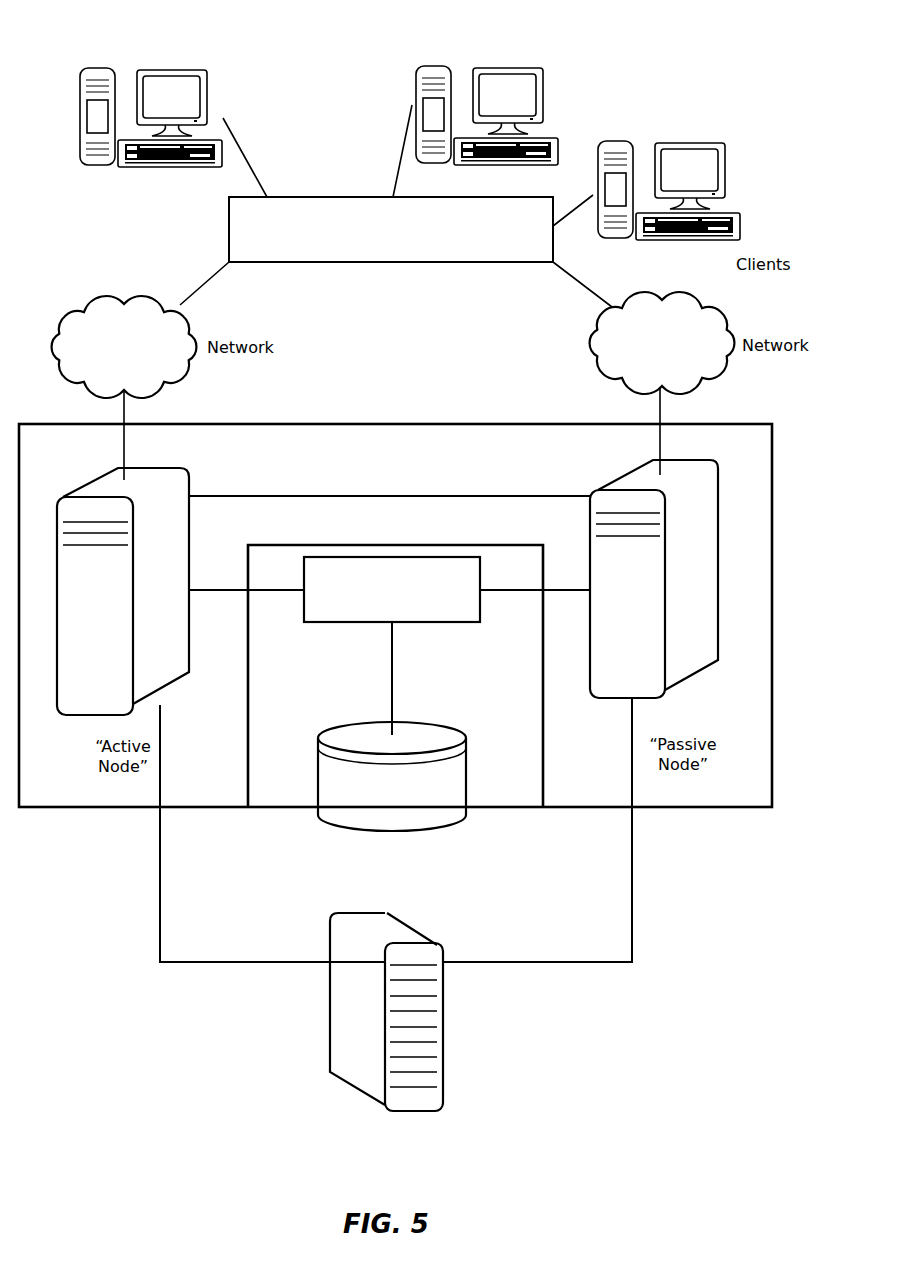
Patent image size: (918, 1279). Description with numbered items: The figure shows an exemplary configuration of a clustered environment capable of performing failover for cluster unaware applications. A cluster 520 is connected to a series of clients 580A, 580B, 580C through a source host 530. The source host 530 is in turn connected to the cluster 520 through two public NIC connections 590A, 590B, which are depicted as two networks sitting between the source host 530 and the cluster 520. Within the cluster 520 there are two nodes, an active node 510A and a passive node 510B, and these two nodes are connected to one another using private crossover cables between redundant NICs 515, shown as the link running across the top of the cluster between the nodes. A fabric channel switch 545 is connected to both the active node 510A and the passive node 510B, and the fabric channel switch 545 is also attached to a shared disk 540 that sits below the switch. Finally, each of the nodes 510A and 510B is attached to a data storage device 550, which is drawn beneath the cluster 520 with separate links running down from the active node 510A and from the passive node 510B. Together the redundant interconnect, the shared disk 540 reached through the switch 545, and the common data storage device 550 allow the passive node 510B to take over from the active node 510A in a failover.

The client 580A is at (690, 143).
The client 580B is at (509, 68).
The client 580C is at (173, 70).
The source host 530 is at (391, 229).
The public NIC connection 590A is at (662, 343).
The public NIC connection 590B is at (124, 347).
The cluster 520 is at (700, 807).
The active node 510A is at (123, 591).
The passive node 510B is at (654, 579).
The redundant NICs 515 is at (385, 496).
The fabric channel switch 545 is at (433, 622).
The shared disk 540 is at (433, 836).
The data storage device 550 is at (412, 1111).